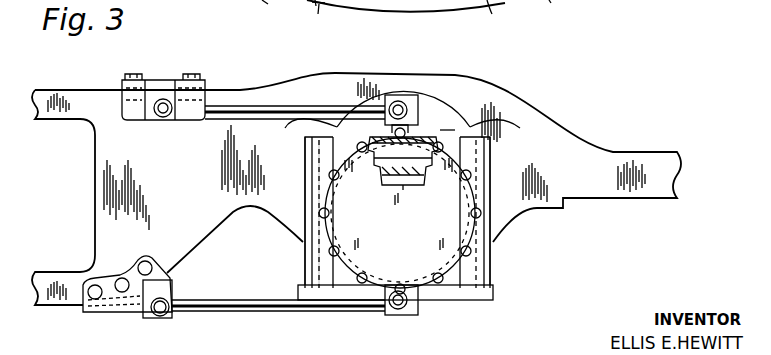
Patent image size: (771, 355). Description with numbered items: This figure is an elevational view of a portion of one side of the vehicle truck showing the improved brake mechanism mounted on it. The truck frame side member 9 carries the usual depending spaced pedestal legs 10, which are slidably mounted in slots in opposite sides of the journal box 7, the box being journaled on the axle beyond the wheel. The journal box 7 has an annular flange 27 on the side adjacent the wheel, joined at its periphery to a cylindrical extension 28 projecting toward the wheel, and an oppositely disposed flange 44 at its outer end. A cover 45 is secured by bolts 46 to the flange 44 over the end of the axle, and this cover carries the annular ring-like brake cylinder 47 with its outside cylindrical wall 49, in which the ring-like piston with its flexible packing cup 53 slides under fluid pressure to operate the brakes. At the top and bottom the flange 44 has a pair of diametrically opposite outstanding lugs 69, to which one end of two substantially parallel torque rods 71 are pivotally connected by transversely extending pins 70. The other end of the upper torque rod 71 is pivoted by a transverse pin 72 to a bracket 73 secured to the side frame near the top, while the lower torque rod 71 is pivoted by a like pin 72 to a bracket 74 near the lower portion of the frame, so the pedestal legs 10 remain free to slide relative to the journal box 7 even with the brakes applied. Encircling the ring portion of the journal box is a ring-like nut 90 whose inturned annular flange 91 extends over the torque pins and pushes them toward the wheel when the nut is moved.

The journal box 7 is at (350, 288).
The side member 9 is at (540, 128).
The pedestal leg 10 is at (303, 238).
The annular flange 27 is at (312, 20).
The cylindrical extension 28 is at (268, 4).
The flange 44 is at (420, 140).
The cover 45 is at (490, 176).
The bolts 46 is at (330, 188).
The brake cylinder 47 is at (404, 168).
The outside cylindrical wall 49 is at (455, 130).
The flexible packing cup 53 is at (386, 158).
The lugs 69 is at (418, 136).
The pins 70 is at (411, 106).
The torque rods 71 is at (260, 107).
The pin 72 is at (163, 118).
The bracket 73 is at (125, 101).
The bracket 74 is at (88, 313).
The ring-like nut 90 is at (551, 3).
The inturned annular flange 91 is at (492, 14).